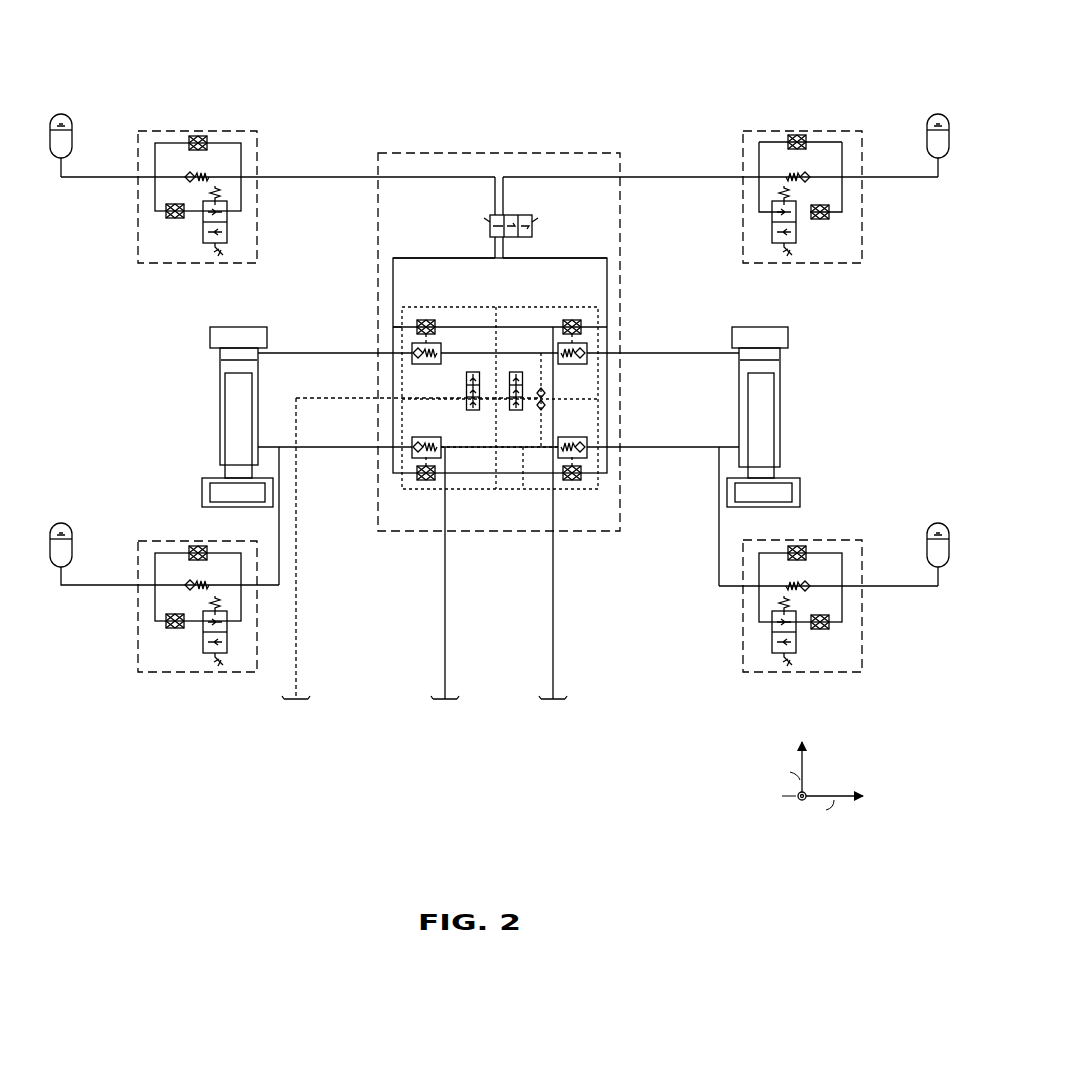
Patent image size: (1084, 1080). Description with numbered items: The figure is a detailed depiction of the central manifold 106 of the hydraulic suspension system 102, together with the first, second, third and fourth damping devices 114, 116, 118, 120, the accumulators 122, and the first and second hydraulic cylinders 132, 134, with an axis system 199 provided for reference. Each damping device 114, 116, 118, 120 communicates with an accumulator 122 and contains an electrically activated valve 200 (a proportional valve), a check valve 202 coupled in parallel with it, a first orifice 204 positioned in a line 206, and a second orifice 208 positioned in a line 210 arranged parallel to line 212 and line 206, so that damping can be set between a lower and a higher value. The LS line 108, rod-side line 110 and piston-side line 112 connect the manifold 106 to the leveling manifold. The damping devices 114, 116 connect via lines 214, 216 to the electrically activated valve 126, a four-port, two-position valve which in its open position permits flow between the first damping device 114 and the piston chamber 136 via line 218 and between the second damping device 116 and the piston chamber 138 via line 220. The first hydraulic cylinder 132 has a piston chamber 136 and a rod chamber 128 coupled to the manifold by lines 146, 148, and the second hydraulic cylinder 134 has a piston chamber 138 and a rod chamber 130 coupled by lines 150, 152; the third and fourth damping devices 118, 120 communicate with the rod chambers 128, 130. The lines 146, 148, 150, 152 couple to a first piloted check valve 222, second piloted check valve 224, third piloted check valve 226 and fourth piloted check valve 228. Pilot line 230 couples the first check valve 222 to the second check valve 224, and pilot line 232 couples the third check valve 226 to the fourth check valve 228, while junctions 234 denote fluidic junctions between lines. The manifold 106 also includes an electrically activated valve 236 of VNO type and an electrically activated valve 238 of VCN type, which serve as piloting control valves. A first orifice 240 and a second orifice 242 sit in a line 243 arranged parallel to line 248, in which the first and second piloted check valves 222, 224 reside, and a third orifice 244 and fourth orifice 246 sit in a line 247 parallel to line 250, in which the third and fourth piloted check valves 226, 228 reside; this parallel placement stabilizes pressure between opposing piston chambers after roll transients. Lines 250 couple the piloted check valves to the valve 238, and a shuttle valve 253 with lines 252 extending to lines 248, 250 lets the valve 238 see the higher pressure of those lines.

The hydraulic suspension system 102 is at (520, 52).
The manifold 106 is at (385, 153).
The LS line 108 is at (297, 600).
The rod-side line 110 is at (447, 600).
The piston-side line 112 is at (555, 600).
The first damping device 114 is at (140, 131).
The second damping device 116 is at (819, 192).
The third damping device 118 is at (138, 563).
The fourth damping device 120 is at (862, 568).
The accumulator 122 is at (937, 523).
The electrically activated valve 126 is at (482, 222).
The rod chamber 128 is at (225, 445).
The rod chamber 130 is at (778, 418).
The first hydraulic cylinder 132 is at (180, 407).
The second hydraulic cylinder 134 is at (820, 394).
The piston chamber 136 is at (228, 355).
The piston chamber 138 is at (772, 351).
The line 146 is at (308, 447).
The line 148 is at (308, 353).
The line 150 is at (648, 353).
The line 152 is at (648, 447).
The axis system 199 is at (836, 770).
The electrically activated valve 200 is at (768, 224).
The check valve 202 is at (788, 166).
The first orifice 204 is at (822, 224).
The line 206 is at (842, 195).
The second orifice 208 is at (797, 135).
The line 210 is at (842, 152).
The line 212 is at (760, 181).
The line 214 is at (286, 177).
The line 216 is at (630, 177).
The line 218 is at (416, 258).
The line 220 is at (595, 258).
The first piloted check valve 222 is at (409, 440).
The second piloted check valve 224 is at (592, 445).
The third piloted check valve 226 is at (428, 370).
The fourth piloted check valve 228 is at (571, 370).
The pilot line 230 is at (455, 489).
The pilot line 232 is at (466, 307).
The junction 234 is at (408, 323).
The electrically activated valve 236 is at (463, 402).
The electrically activated valve 238 is at (534, 412).
The first orifice 240 is at (424, 482).
The second orifice 242 is at (574, 482).
The line 243 is at (523, 490).
The third orifice 244 is at (426, 320).
The fourth orifice 246 is at (572, 320).
The line 247 is at (535, 327).
The line 248 is at (504, 449).
The line 250 is at (546, 353).
The lines 252 is at (546, 394).
The shuttle valve 253 is at (549, 408).